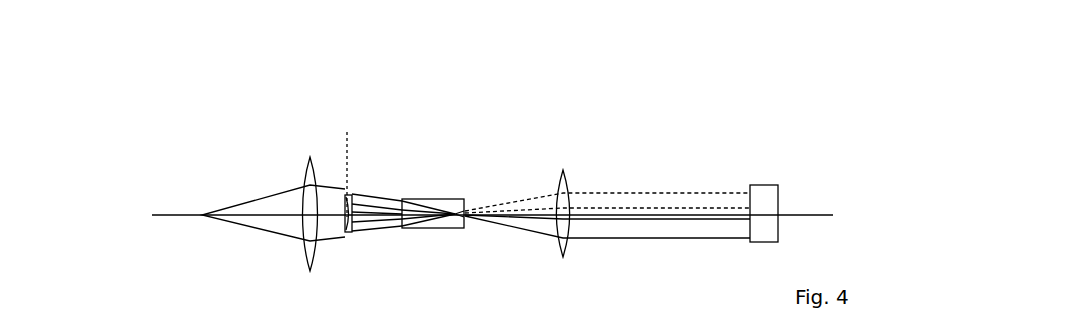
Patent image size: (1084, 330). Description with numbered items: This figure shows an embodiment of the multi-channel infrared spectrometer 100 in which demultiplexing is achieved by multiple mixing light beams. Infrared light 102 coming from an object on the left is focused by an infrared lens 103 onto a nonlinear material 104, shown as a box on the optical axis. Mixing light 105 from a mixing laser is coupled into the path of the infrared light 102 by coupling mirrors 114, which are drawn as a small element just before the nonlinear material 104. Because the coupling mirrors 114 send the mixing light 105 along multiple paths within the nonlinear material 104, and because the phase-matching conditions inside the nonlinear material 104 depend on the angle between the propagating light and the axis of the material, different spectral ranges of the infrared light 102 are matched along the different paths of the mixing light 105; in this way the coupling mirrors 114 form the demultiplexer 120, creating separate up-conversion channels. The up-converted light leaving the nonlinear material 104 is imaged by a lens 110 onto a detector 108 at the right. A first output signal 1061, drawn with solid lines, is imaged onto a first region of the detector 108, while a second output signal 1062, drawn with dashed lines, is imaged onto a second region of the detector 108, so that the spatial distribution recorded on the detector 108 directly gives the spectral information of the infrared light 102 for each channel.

The spectrometer 100 is at (789, 77).
The infrared light 102 is at (273, 199).
The infrared lens 103 is at (299, 197).
The nonlinear material 104 is at (446, 187).
The mixing light 105 is at (368, 172).
The detector 108 is at (772, 187).
The lens 110 is at (579, 185).
The coupling mirrors 114 is at (373, 233).
The demultiplexer 120 is at (382, 195).
The first output signal 1061 is at (607, 249).
The second output signal 1062 is at (607, 182).